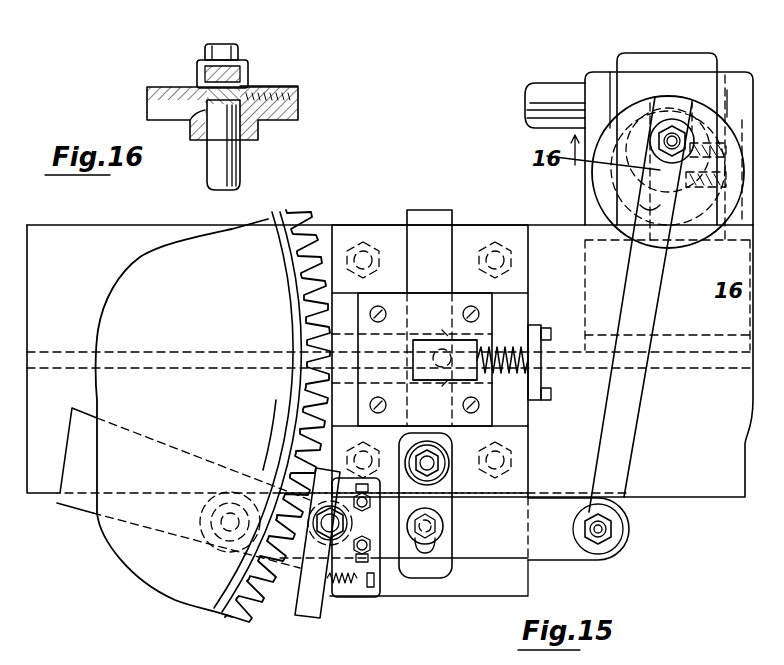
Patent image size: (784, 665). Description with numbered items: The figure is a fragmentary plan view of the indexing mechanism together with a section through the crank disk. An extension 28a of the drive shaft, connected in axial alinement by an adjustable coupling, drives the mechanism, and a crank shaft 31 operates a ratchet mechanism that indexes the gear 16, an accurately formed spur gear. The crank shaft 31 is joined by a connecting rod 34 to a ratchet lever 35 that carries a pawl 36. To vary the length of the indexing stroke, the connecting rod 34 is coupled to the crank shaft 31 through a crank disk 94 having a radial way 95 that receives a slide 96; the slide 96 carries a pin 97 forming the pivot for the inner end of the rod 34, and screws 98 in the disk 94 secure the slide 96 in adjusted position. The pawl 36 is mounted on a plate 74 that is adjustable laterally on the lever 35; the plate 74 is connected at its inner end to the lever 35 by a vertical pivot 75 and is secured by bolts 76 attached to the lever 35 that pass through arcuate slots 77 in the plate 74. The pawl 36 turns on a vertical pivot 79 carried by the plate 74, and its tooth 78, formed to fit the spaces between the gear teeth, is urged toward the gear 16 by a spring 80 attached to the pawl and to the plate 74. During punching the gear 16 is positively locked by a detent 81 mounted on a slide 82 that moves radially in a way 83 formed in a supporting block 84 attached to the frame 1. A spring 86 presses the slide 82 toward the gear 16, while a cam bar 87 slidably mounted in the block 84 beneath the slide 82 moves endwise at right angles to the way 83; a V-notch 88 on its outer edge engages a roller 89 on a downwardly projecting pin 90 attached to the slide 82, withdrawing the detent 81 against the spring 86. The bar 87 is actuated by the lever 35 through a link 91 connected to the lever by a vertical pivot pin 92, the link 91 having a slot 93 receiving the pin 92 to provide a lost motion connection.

In FIG. 15, the frame 1 is at (686, 482).
In FIG. 15, the gear 16 is at (231, 618).
In FIG. 15, the extension 28a is at (548, 88).
In FIG. 16, the crank shaft 31 is at (216, 163).
In FIG. 15, the crank shaft 31 is at (668, 172).
In FIG. 16, the connecting rod 34 is at (241, 66).
In FIG. 15, the connecting rod 34 is at (622, 316).
In FIG. 15, the ratchet lever 35 is at (553, 553).
In FIG. 15, the pawl 36 is at (318, 452).
In FIG. 15, the plate 74 is at (381, 600).
In FIG. 15, the vertical pivot 75 is at (228, 530).
In FIG. 15, the bolts 76 is at (388, 560).
In FIG. 15, the arcuate slots 77 is at (373, 538).
In FIG. 15, the tooth 78 is at (320, 500).
In FIG. 15, the vertical pivot 79 is at (314, 513).
In FIG. 15, the spring 80 is at (347, 590).
In FIG. 15, the detent 81 is at (306, 352).
In FIG. 15, the slide 82 is at (343, 340).
In FIG. 15, the way 83 is at (510, 382).
In FIG. 15, the supporting block 84 is at (530, 420).
In FIG. 15, the spring 86 is at (500, 348).
In FIG. 15, the cam bar 87 is at (432, 218).
In FIG. 15, the V-notch 88 is at (455, 334).
In FIG. 15, the roller 89 is at (445, 399).
In FIG. 15, the pin 90 is at (413, 353).
In FIG. 15, the link 91 is at (445, 500).
In FIG. 15, the vertical pivot pin 92 is at (442, 532).
In FIG. 15, the slot 93 is at (428, 553).
In FIG. 16, the crank disk 94 is at (275, 123).
In FIG. 15, the crank disk 94 is at (628, 215).
In FIG. 16, the radial way 95 is at (200, 110).
In FIG. 15, the radial way 95 is at (688, 120).
In FIG. 16, the slide 96 is at (249, 90).
In FIG. 15, the slide 96 is at (667, 125).
In FIG. 16, the pin 97 is at (220, 43).
In FIG. 15, the pin 97 is at (665, 128).
In FIG. 16, the screws 98 is at (280, 87).
In FIG. 15, the screws 98 is at (731, 272).